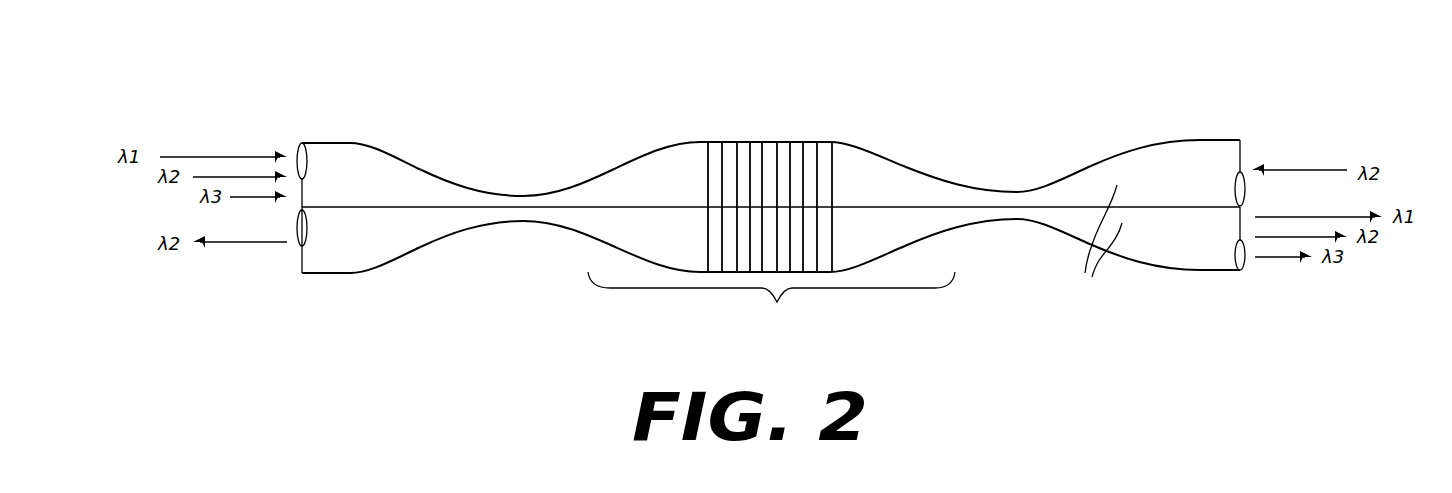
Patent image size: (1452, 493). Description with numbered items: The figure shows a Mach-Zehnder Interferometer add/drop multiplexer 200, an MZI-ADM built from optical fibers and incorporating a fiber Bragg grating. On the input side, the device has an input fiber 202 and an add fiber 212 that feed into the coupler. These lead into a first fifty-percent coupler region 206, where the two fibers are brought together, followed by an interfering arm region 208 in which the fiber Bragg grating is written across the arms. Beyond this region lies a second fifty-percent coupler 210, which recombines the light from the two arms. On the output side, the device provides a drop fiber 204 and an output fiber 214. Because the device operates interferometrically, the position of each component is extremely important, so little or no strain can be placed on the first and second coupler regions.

The Mach-Zehnder Interferometer add/drop multiplexer 200 is at (1100, 62).
The input fiber 202 is at (370, 158).
The drop fiber 204 is at (373, 252).
The first 50% coupler region 206 is at (528, 195).
The interfering arm region 208 is at (738, 160).
The second 50% coupler 210 is at (1018, 190).
The add fiber 212 is at (1195, 162).
The output fiber 214 is at (1185, 237).